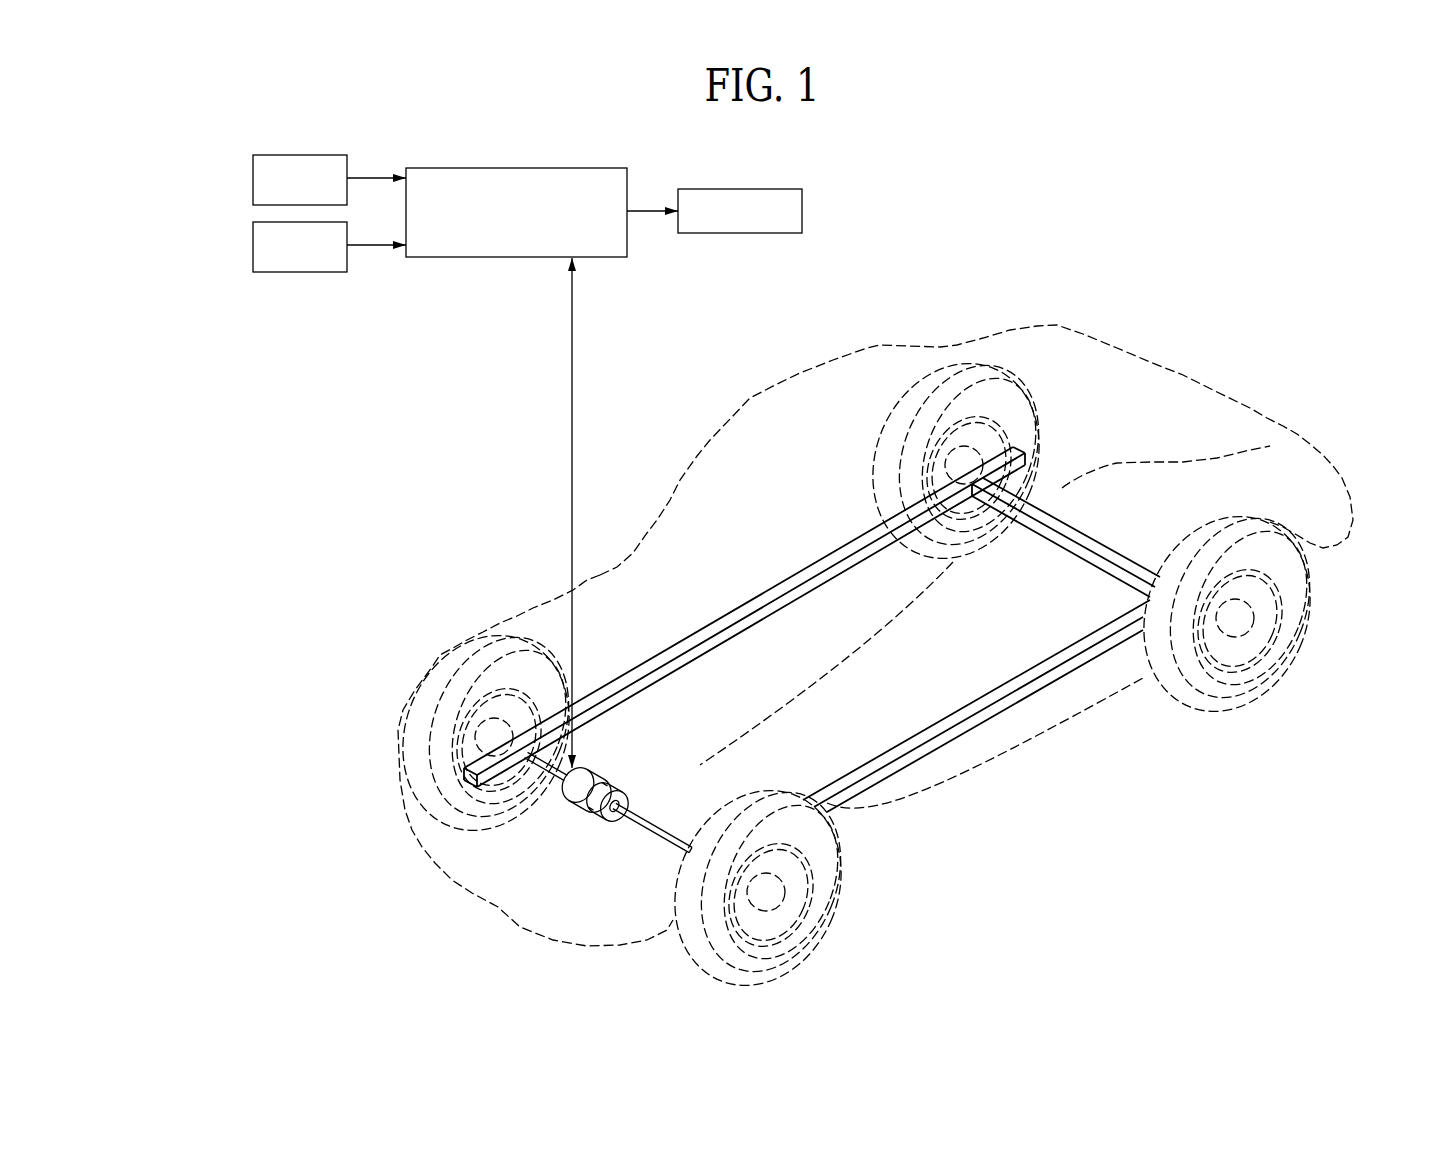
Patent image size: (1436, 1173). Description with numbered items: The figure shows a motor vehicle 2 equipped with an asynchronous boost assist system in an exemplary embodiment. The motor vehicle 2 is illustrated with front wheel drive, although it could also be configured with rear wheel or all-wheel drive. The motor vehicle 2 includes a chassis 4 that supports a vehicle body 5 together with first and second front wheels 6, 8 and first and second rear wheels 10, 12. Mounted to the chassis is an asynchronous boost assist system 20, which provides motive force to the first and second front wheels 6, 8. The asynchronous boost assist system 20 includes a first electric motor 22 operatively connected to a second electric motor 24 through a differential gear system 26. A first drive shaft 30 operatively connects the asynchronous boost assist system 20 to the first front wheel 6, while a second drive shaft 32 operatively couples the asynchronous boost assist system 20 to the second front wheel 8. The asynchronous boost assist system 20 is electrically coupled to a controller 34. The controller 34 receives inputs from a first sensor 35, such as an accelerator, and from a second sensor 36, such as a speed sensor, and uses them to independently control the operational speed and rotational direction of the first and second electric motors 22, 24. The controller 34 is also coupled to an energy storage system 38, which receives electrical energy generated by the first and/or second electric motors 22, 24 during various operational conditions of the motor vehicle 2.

The motor vehicle 2 is at (502, 477).
The chassis 4 is at (792, 570).
The vehicle body 5 is at (750, 397).
The first front wheel 6 is at (440, 660).
The second front wheel 8 is at (803, 940).
The first rear wheel 10 is at (950, 380).
The second rear wheel 12 is at (1255, 677).
The asynchronous boost assist system 20 is at (518, 839).
The first electric motor 22 is at (560, 800).
The second electric motor 24 is at (590, 825).
The differential gear system 26 is at (605, 767).
The first drive shaft 30 is at (534, 770).
The second drive shaft 32 is at (667, 843).
The controller 34 is at (517, 167).
The first sensor 35 is at (276, 155).
The second sensor 36 is at (270, 272).
The energy storage system 38 is at (740, 233).